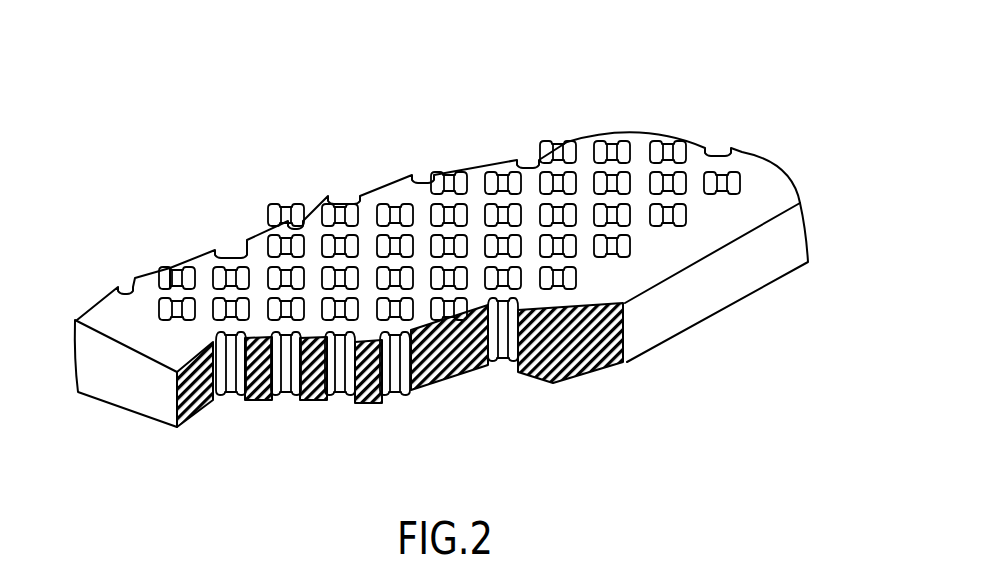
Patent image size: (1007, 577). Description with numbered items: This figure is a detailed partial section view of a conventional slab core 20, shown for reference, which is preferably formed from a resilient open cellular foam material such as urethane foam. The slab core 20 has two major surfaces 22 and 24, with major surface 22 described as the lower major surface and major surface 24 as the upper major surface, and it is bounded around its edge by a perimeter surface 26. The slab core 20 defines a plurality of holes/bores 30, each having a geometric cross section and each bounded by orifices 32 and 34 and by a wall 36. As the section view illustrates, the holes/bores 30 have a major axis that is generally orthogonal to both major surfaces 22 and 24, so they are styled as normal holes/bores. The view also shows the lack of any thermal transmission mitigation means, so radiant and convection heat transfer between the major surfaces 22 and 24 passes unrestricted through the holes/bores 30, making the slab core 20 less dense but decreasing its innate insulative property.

The slab core 20 is at (734, 307).
The major surface 22 is at (775, 186).
The major surface 24 is at (645, 336).
The perimeter surface 26 is at (758, 260).
The holes/bores 30 is at (285, 240).
The orifices 32 is at (517, 168).
The orifices 34 is at (232, 392).
The wall 36 is at (278, 395).